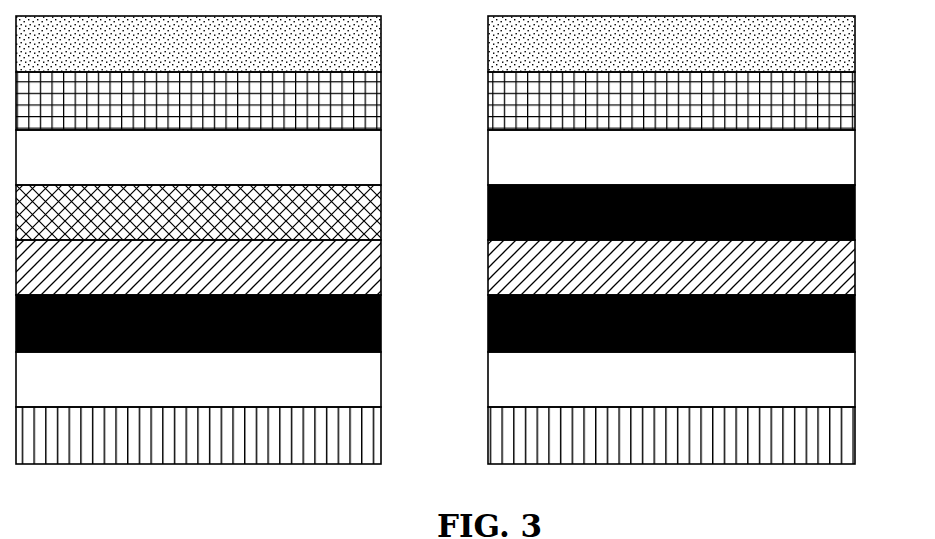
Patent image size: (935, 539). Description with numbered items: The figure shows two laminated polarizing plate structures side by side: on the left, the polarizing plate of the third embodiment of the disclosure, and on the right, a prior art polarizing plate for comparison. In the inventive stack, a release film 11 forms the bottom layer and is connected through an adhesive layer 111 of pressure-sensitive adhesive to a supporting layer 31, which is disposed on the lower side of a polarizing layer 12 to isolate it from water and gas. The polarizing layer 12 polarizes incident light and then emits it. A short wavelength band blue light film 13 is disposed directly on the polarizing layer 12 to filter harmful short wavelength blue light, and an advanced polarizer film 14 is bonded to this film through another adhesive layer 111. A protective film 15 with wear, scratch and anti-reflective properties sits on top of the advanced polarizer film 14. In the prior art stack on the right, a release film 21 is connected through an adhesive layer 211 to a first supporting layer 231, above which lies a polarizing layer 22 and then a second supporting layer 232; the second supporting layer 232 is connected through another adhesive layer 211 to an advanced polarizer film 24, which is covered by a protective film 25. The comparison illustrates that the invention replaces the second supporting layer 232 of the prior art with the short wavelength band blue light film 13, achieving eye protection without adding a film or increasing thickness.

The release film 11 is at (381, 428).
The adhesive layer 111 is at (381, 151).
The polarizing layer 12 is at (381, 262).
The short wavelength band blue light film 13 is at (381, 204).
The advanced polarizer film 14 is at (381, 94).
The protective film 15 is at (381, 47).
The supporting layer 31 is at (381, 318).
The release film 21 is at (855, 428).
The adhesive layer 211 is at (855, 151).
The polarizing layer 22 is at (855, 262).
The first supporting layer 231 is at (855, 318).
The second supporting layer 232 is at (855, 204).
The advanced polarizer film 24 is at (855, 94).
The protective film 25 is at (855, 47).